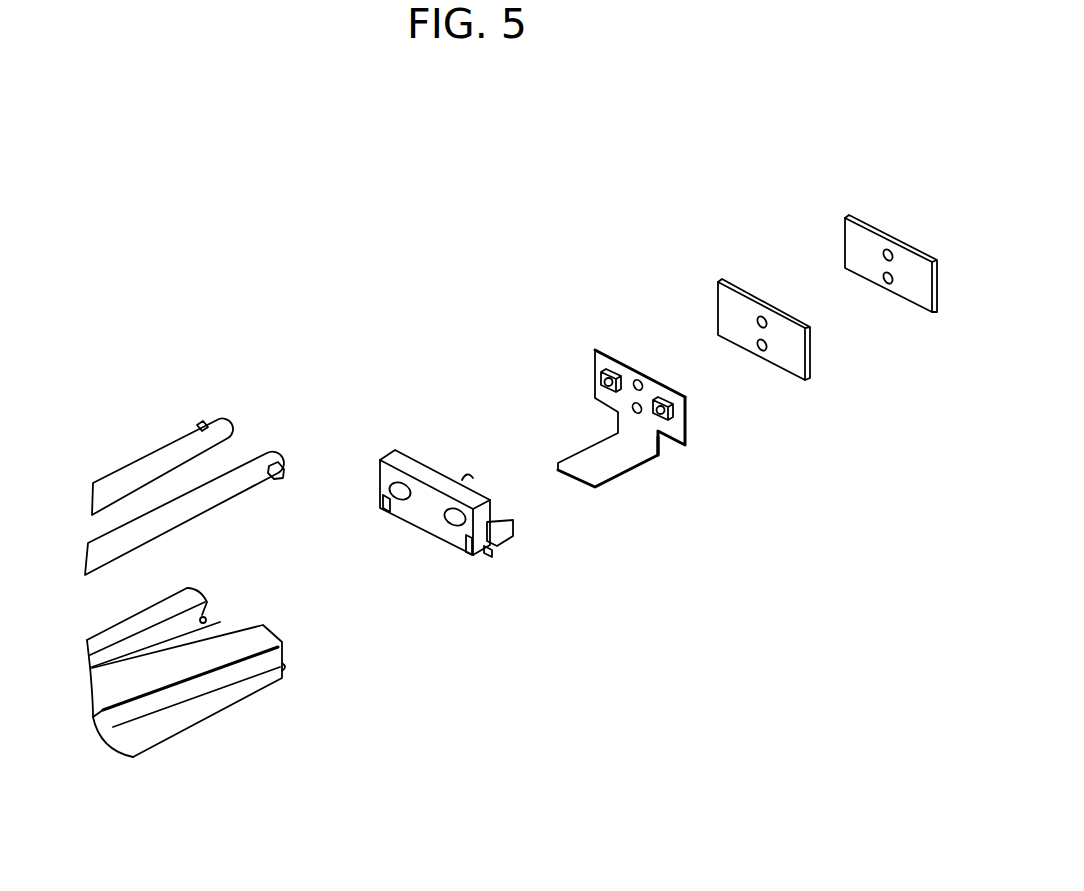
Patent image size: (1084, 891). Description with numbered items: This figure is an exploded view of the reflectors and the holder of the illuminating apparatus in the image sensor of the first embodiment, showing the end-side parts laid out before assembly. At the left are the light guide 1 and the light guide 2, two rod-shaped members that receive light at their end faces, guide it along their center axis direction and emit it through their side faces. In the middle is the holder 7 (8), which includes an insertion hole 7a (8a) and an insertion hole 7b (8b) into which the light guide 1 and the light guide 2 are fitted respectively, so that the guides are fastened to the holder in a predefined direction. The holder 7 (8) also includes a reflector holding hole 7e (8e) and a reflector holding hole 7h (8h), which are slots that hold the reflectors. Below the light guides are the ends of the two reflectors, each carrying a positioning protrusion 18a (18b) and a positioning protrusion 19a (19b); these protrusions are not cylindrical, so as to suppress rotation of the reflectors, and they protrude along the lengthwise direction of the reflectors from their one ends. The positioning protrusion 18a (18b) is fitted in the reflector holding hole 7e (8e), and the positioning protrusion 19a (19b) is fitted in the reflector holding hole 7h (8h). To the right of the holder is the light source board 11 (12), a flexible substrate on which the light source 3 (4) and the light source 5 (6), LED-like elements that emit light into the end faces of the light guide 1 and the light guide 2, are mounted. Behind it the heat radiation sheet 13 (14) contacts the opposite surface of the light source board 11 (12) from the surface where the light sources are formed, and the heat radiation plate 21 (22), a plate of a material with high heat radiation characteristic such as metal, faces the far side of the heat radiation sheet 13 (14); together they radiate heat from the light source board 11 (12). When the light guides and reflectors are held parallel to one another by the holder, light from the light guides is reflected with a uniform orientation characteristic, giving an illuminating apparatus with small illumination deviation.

The light guide 1 is at (180, 437).
The light guide 2 is at (265, 456).
The light source 3 is at (618, 388).
The light source 4 is at (618, 388).
The light source 5 is at (698, 468).
The light source 6 is at (683, 420).
The holder 7 is at (399, 519).
The holder 8 is at (399, 519).
The insertion hole 7a is at (346, 452).
The insertion hole 8a is at (397, 491).
The insertion hole 7b is at (480, 442).
The insertion hole 8b is at (458, 515).
The reflector holding hole 7e is at (336, 543).
The reflector holding hole 8e is at (377, 510).
The reflector holding hole 7h is at (490, 622).
The reflector holding hole 8h is at (477, 560).
The light source board 11 is at (580, 314).
The light source board 12 is at (613, 362).
The heat radiation sheet 13 is at (723, 269).
The heat radiation sheet 14 is at (733, 293).
The positioning protrusion 18a is at (190, 582).
The positioning protrusion 18b is at (207, 618).
The positioning protrusion 19a is at (213, 728).
The positioning protrusion 19b is at (287, 667).
The heat radiation plate 21 is at (854, 197).
The heat radiation plate 22 is at (862, 230).